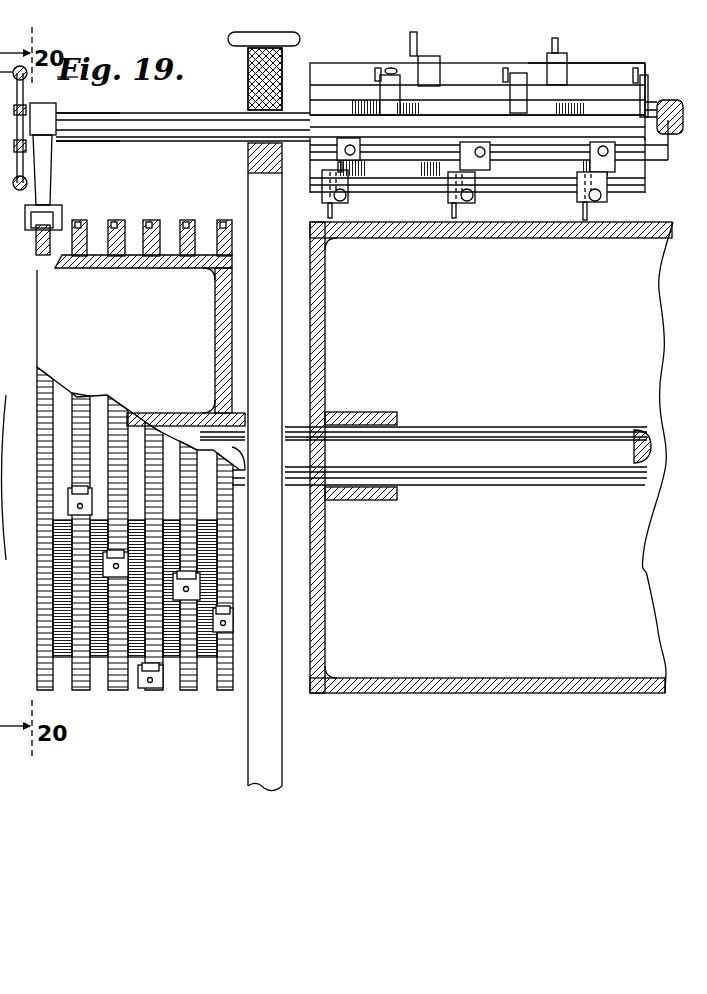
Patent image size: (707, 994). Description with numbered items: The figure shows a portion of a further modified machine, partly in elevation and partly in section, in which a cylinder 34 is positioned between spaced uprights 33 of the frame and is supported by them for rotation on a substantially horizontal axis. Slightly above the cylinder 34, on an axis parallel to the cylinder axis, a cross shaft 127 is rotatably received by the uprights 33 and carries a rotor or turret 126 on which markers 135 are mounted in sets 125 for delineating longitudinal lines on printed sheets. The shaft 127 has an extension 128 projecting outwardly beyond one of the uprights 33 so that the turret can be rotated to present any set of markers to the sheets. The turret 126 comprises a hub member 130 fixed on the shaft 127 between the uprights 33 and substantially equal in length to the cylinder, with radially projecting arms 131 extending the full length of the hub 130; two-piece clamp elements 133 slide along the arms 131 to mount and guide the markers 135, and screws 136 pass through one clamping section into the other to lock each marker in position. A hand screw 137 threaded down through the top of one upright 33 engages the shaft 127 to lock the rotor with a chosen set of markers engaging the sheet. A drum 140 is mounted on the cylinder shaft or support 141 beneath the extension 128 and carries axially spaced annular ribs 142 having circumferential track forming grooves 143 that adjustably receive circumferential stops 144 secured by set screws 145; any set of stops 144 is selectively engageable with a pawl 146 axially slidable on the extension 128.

The upright 33 is at (263, 312).
The cylinder 34 is at (638, 318).
The set of markers 125 is at (500, 209).
The rotor or turret 126 is at (606, 74).
The cross shaft 127 is at (242, 126).
The extension 128 is at (96, 100).
The hub member 130 is at (660, 100).
The radially projecting arm 131 is at (334, 112).
The two-piece clamp element 133 is at (468, 50).
The marker 135 is at (560, 45).
The screw 136 is at (400, 54).
The hand screw 137 is at (230, 38).
The drum 140 is at (128, 364).
The cylinder shaft or support 141 is at (461, 452).
The annular rib 142 is at (118, 228).
The circumferential track forming groove 143 is at (110, 208).
The circumferential stop 144 is at (236, 618).
The set screw 145 is at (82, 487).
The pawl 146 is at (52, 174).